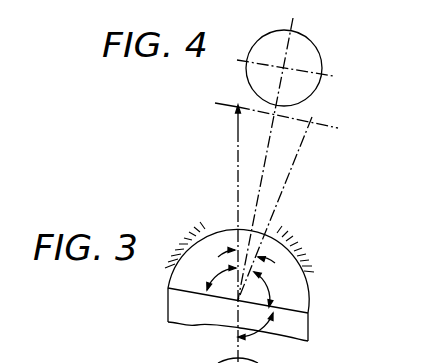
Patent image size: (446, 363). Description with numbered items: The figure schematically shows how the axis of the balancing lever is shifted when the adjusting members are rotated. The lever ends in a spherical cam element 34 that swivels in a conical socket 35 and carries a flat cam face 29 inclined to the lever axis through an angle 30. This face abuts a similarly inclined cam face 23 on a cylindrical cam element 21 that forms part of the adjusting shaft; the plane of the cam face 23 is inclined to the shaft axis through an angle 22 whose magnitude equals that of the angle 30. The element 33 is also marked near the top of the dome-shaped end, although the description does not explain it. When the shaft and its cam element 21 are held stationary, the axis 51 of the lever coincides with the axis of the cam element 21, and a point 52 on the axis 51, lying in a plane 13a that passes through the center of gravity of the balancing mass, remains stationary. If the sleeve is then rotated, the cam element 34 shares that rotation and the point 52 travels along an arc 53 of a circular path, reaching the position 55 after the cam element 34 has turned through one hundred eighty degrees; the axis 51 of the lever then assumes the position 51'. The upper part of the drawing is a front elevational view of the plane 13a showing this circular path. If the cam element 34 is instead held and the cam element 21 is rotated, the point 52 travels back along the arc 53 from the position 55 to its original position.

In FIG. 4, the plane 13a is at (223, 105).
In FIG. 3, the cylindrical cam element 21 is at (200, 323).
In FIG. 3, the angle 22 is at (269, 321).
In FIG. 3, the cam face 23 is at (185, 295).
In FIG. 3, the cam face 29 is at (308, 313).
In FIG. 3, the angle 30 is at (220, 274).
In FIG. 3, the apex region of dome 33 is at (237, 229).
In FIG. 3, the cam element 34 is at (308, 292).
In FIG. 3, the conical socket 35 is at (188, 245).
In FIG. 3, the axis 51 is at (221, 246).
In FIG. 3, the position of the axis 51' is at (289, 208).
In FIG. 4, the point 52 is at (246, 61).
In FIG. 4, the arc 53 is at (311, 42).
In FIG. 4, the position 55 is at (323, 73).